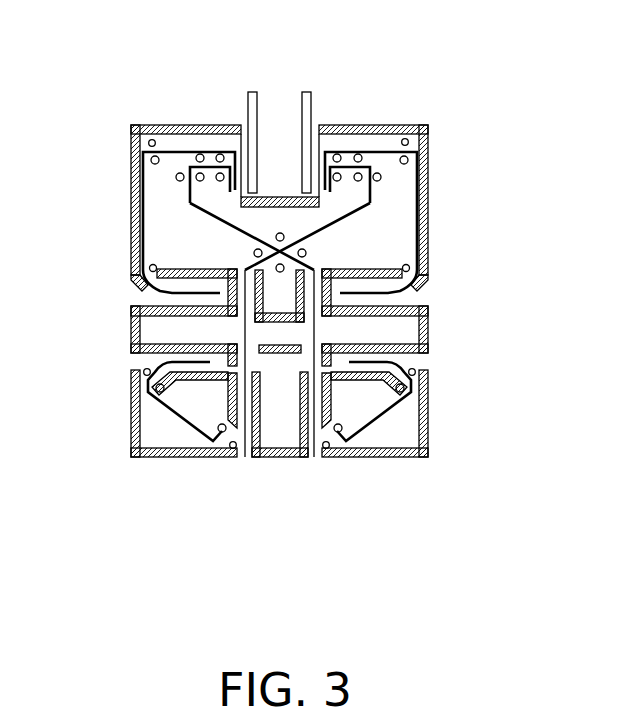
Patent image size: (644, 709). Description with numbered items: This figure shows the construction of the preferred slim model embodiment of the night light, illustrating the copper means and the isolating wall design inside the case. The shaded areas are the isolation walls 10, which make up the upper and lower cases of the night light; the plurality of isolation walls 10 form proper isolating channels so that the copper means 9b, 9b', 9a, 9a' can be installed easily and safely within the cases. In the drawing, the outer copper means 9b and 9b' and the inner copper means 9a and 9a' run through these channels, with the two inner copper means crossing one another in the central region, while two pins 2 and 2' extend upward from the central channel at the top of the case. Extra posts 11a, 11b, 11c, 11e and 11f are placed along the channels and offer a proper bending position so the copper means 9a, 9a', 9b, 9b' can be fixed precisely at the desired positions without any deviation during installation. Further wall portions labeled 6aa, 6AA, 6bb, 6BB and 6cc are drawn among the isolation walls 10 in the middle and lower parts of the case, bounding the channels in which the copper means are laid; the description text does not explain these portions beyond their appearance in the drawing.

The terminal pin 2 is at (325, 96).
The terminal pin 2' is at (227, 96).
The copper means 9a is at (379, 218).
The copper means 9a' is at (178, 218).
The copper means 9b is at (373, 163).
The copper means 9b' is at (184, 162).
The isolation walls 10 is at (131, 130).
The extra post 11a is at (406, 139).
The extra post 11b is at (408, 160).
The extra post 11c is at (415, 373).
The extra post 11e is at (150, 266).
The extra post 11f is at (152, 140).
The partition bar 6aa is at (419, 291).
The partition bar with conductor 6AA is at (420, 362).
The central partition 6bb is at (244, 458).
The central partition 6BB is at (320, 452).
The partition bar with conductor 6cc is at (133, 368).